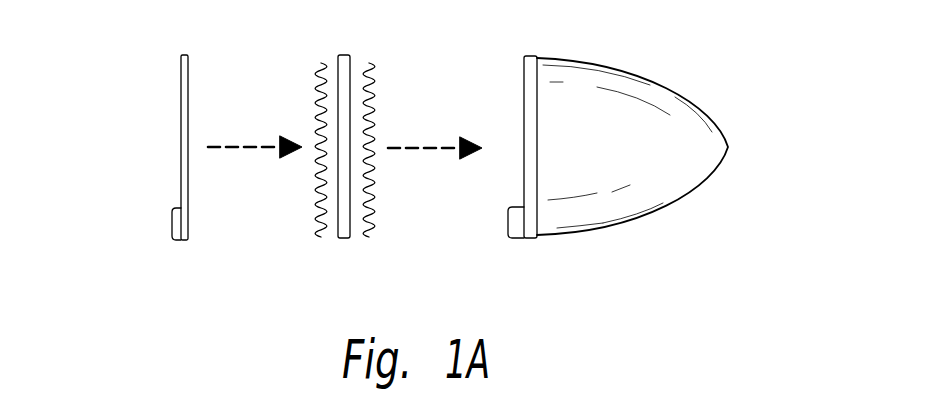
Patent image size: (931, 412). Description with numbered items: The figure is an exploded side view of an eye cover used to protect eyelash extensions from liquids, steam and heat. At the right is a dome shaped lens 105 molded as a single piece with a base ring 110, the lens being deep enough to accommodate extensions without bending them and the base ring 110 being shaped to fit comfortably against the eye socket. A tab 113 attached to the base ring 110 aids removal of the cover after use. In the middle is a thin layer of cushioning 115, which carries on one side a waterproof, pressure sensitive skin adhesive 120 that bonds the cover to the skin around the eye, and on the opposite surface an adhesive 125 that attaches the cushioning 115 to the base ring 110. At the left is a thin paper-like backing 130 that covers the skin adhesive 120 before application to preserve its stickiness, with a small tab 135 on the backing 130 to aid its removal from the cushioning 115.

The dome shaped lens 105 is at (728, 150).
The base ring 110 is at (537, 57).
The tab 113 is at (509, 229).
The cushioning 115 is at (342, 241).
The skin adhesive 120 is at (316, 97).
The adhesive 125 is at (376, 88).
The backing 130 is at (181, 92).
The tab 135 is at (171, 224).